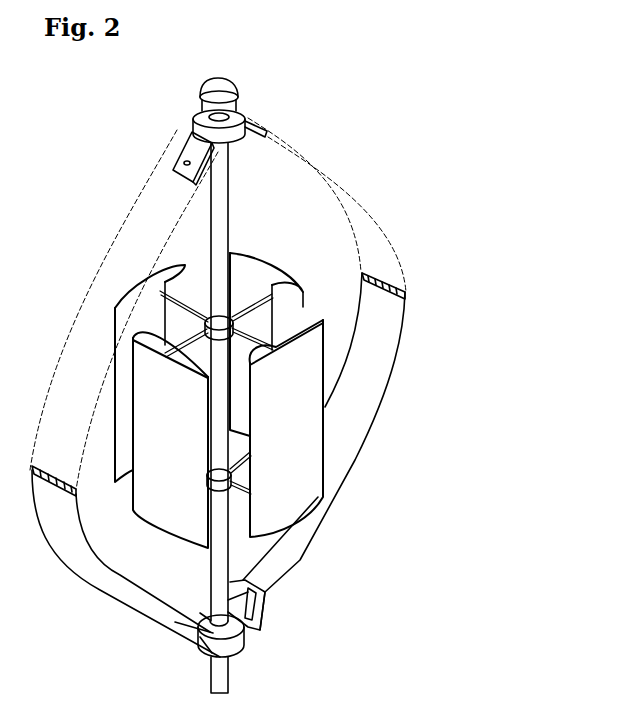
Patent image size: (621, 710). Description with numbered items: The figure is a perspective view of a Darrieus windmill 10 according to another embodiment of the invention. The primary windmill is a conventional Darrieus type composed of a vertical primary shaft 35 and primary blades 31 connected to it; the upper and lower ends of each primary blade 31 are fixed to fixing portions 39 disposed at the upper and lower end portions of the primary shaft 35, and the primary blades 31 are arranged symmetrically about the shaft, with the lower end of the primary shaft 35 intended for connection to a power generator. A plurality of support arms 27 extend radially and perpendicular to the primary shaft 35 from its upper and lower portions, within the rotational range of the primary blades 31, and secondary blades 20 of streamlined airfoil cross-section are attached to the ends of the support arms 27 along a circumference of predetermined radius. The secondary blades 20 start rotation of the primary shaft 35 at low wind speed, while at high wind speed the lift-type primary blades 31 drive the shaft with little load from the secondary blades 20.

The Darrieus windmill 10 is at (84, 108).
The secondary blade 20 is at (305, 442).
The support arm 27 is at (253, 297).
The primary blade 31 is at (120, 593).
The primary shaft 35 is at (220, 547).
The fixing portion 39 is at (240, 116).